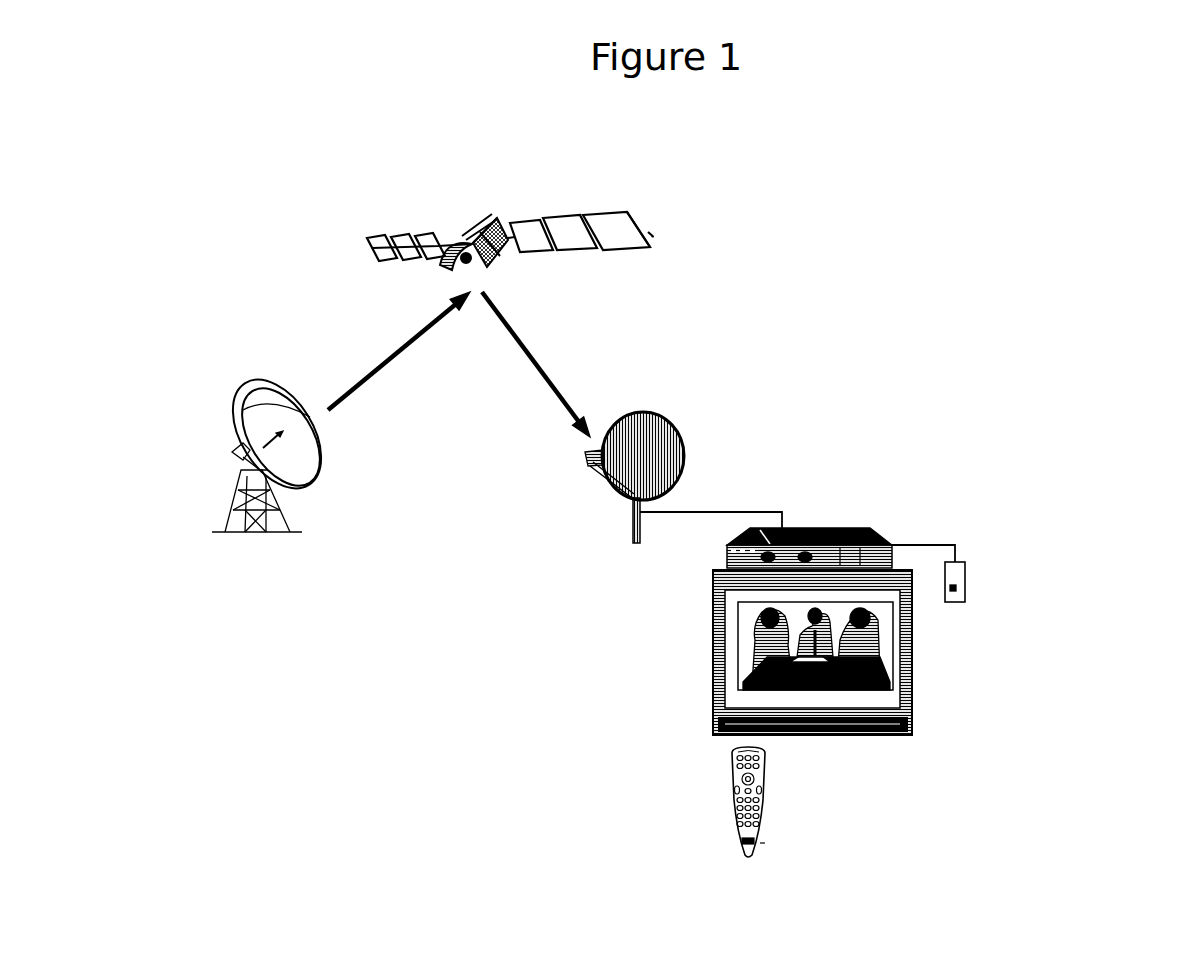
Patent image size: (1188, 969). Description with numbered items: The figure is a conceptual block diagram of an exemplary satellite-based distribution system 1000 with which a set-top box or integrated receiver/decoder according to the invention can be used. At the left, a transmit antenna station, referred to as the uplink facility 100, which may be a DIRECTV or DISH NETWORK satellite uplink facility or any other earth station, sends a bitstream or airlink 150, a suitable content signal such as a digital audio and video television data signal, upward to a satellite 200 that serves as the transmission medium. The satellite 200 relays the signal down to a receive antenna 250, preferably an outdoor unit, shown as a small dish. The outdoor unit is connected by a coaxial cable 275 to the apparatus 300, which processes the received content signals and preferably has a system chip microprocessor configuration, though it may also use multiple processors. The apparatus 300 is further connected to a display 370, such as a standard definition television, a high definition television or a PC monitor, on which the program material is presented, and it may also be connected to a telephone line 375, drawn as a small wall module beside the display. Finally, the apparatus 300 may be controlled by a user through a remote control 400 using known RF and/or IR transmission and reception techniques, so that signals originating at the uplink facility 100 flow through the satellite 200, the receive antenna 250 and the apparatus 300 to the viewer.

The system 1000 is at (994, 286).
The uplink facility 100 is at (222, 532).
The airlink 150 is at (392, 352).
The satellite 200 is at (652, 236).
The receive antenna 250 is at (613, 493).
The coaxial cable 275 is at (708, 512).
The apparatus 300 is at (845, 527).
The display 370 is at (910, 730).
The telephone line 375 is at (965, 587).
The remote control 400 is at (732, 810).